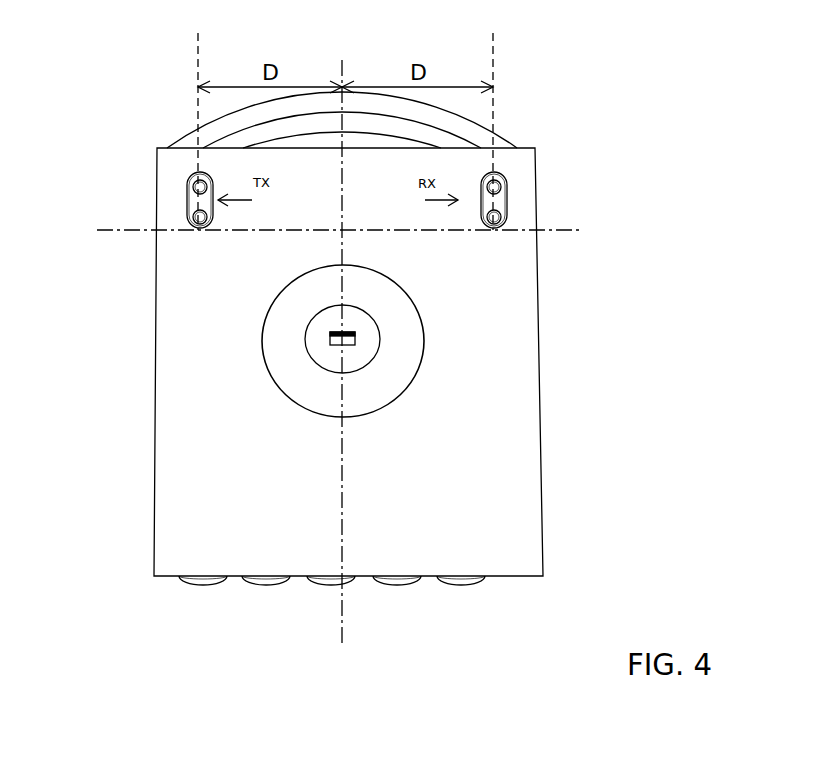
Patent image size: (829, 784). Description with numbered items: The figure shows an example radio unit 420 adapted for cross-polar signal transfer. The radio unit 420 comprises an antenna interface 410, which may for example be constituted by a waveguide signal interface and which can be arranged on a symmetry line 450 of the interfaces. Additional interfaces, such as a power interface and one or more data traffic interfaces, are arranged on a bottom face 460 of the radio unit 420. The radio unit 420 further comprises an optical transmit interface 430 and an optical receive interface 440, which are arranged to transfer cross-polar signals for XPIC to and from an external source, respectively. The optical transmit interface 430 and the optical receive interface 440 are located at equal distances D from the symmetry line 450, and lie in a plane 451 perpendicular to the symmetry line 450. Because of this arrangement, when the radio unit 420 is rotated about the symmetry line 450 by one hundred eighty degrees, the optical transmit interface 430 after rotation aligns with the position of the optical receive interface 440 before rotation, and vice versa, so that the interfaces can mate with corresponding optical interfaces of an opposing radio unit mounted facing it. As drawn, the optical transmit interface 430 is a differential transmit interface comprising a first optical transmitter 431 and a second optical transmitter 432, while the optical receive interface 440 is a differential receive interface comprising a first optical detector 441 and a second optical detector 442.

The antenna interface 410 is at (350, 345).
The radio unit 420 is at (190, 398).
The optical transmit interface 430 is at (139, 203).
The first optical transmitter 431 is at (195, 177).
The second optical transmitter 432 is at (202, 231).
The optical receive interface 440 is at (561, 199).
The first optical detector 441 is at (496, 177).
The second optical detector 442 is at (495, 224).
The symmetry line 450 is at (342, 515).
The plane 451 is at (305, 235).
The bottom face 460 is at (397, 592).